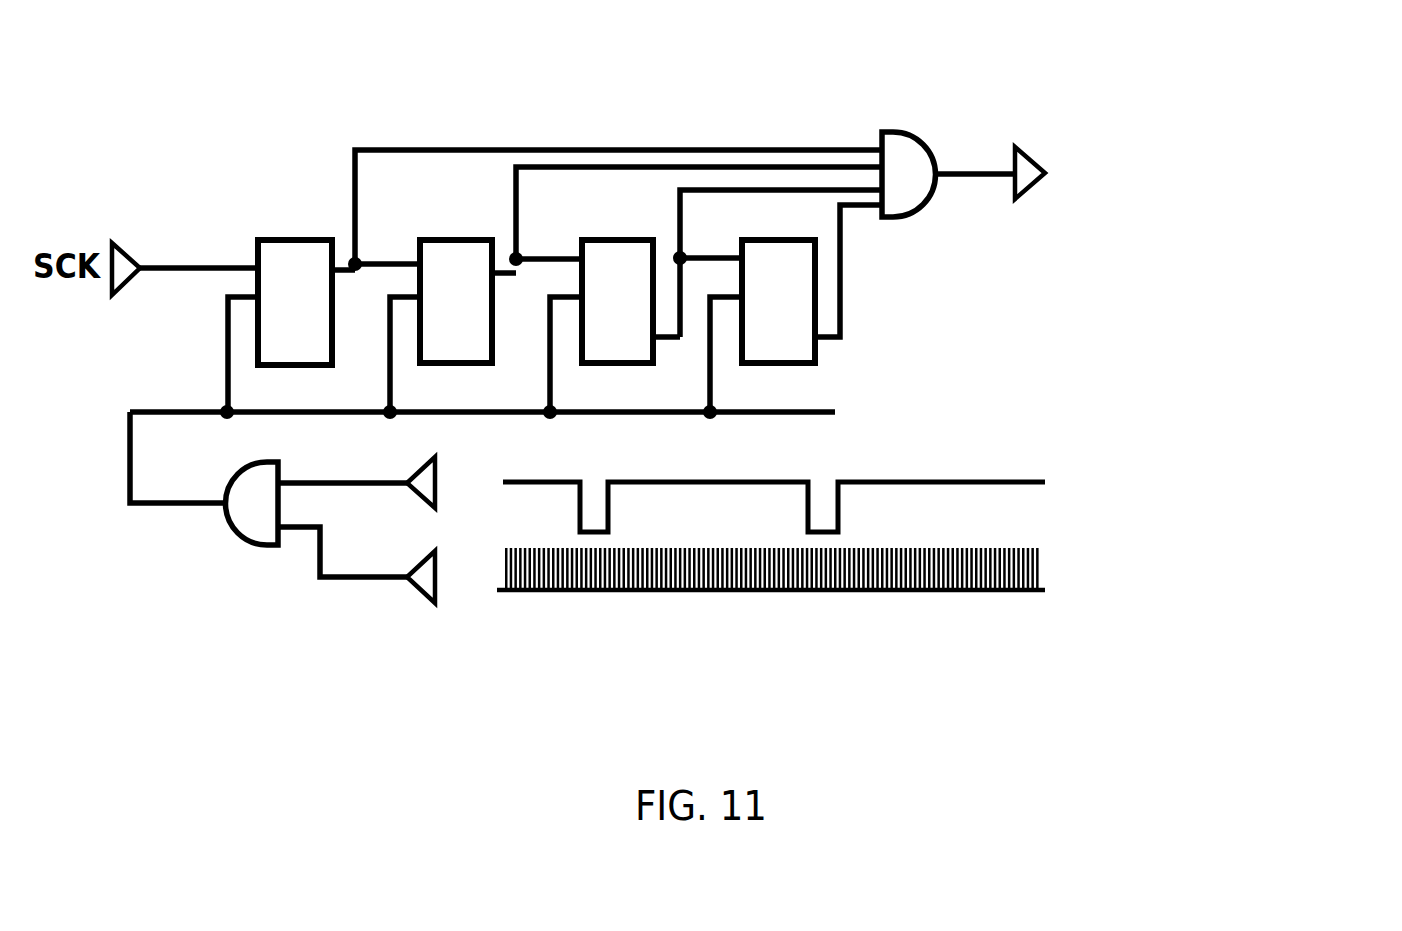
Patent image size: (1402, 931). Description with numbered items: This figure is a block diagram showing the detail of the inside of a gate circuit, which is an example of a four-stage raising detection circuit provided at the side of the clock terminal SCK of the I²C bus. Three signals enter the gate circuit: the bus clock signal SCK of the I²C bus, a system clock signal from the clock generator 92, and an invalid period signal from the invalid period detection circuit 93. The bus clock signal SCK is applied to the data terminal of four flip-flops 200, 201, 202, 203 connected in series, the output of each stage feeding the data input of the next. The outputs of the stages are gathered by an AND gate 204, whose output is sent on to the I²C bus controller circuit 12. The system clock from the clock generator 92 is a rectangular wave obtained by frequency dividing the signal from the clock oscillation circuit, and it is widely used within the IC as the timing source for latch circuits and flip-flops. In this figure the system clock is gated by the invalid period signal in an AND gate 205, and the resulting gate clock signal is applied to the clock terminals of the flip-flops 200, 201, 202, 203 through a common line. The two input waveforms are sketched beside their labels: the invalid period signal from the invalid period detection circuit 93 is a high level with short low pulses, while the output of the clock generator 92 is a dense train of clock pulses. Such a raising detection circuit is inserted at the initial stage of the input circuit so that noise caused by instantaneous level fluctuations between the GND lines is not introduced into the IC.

The flip-flop 200 is at (275, 239).
The flip-flop 201 is at (437, 241).
The flip-flop 202 is at (596, 240).
The flip-flop 203 is at (757, 240).
The AND gate 204 is at (918, 135).
The AND gate 205 is at (255, 547).
The I2C bus controller circuit 12 is at (1176, 173).
The clock generator 92 is at (932, 573).
The invalid period detection circuit 93 is at (906, 493).